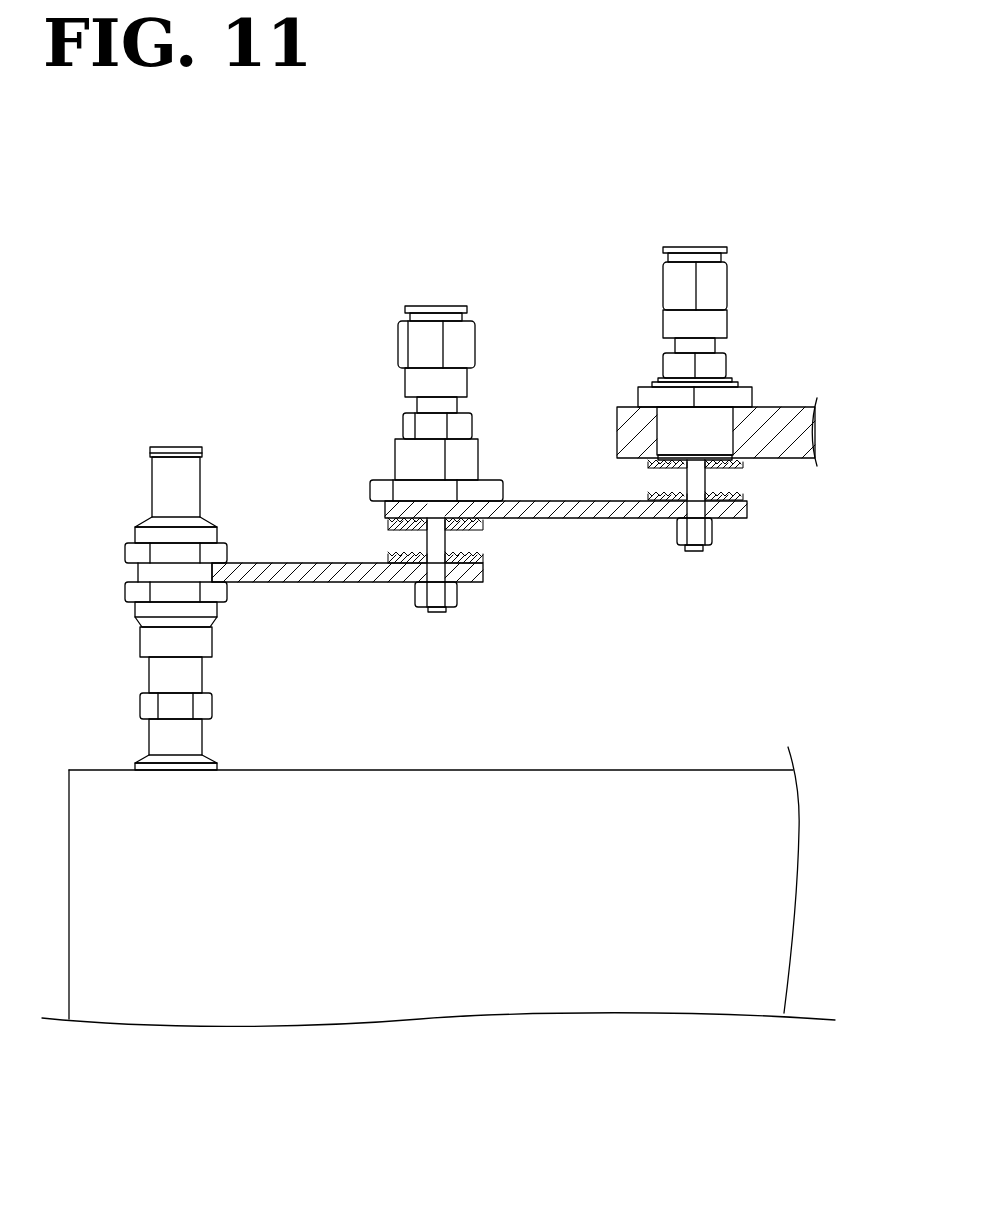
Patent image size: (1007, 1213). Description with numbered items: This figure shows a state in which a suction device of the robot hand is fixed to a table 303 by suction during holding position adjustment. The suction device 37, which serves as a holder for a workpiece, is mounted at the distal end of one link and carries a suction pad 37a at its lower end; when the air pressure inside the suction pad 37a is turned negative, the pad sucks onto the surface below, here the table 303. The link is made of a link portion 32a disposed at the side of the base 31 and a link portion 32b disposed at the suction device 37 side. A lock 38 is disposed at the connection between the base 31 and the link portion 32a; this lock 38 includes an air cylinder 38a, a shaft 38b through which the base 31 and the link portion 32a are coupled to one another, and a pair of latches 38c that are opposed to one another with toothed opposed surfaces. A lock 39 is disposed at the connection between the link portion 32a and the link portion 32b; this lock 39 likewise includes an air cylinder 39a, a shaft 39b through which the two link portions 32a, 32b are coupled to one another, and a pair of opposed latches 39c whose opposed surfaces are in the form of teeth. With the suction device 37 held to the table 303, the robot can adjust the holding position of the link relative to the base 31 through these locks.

The base 31 is at (775, 405).
The link portion 32a is at (553, 508).
The link portion 32b is at (302, 572).
The suction device 37 is at (175, 465).
The suction pad 37a is at (218, 762).
The lock 38 is at (707, 280).
The air cylinder 38a is at (672, 292).
The shaft 38b is at (699, 476).
The latches 38c is at (648, 464).
The lock 39 is at (430, 338).
The air cylinder 39a is at (410, 352).
The shaft 39b is at (442, 538).
The latches 39c is at (392, 521).
The table 303 is at (466, 768).